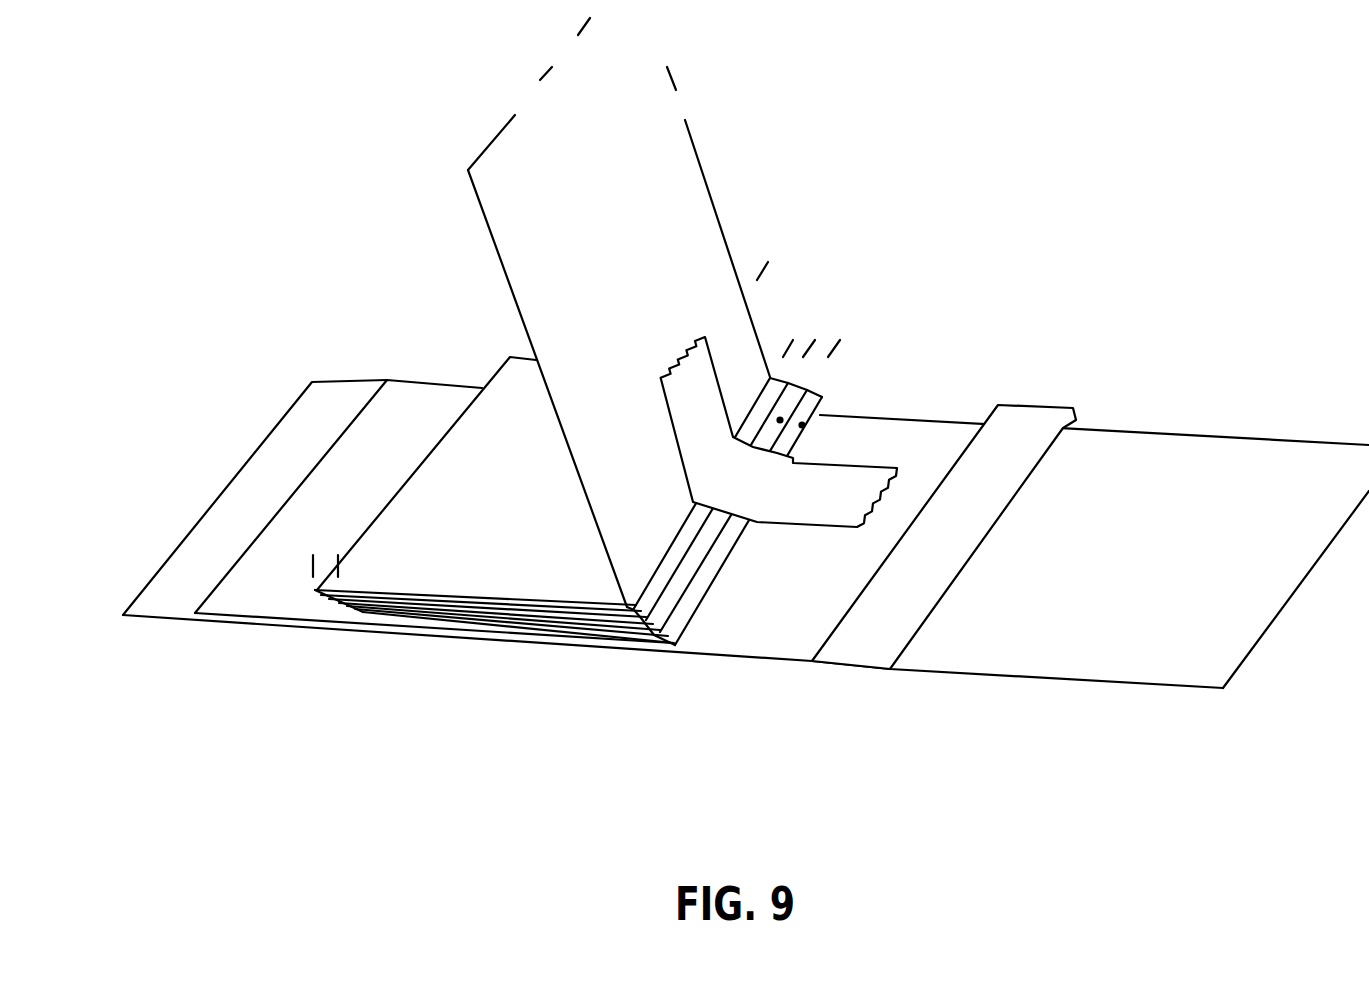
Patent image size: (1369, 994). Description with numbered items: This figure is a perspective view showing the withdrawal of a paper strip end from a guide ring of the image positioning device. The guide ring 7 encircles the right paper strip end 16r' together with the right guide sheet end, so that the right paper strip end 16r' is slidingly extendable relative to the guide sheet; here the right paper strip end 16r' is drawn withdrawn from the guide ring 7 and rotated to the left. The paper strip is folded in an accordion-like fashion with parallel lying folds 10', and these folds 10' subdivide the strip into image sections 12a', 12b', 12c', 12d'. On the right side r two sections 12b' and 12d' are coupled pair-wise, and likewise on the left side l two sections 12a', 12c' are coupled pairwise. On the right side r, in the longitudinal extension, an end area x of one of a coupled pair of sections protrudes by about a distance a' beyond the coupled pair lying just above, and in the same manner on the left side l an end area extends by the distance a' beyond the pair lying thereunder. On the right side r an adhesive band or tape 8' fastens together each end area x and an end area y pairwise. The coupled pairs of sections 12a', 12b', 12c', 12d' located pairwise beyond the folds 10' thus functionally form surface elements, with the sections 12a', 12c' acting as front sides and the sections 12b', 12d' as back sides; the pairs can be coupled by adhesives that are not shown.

The right paper strip end 16r' is at (640, 312).
The folds 10' is at (472, 468).
The left side l is at (358, 480).
The distance a' is at (582, 427).
The end area y is at (780, 420).
The end area x is at (802, 425).
The adhesive band 8' is at (841, 374).
The guide ring 7 is at (1022, 428).
The section 12a' is at (478, 673).
The section 12b' is at (507, 683).
The section 12c' is at (491, 714).
The section 12d' is at (516, 709).
The right side r is at (733, 593).